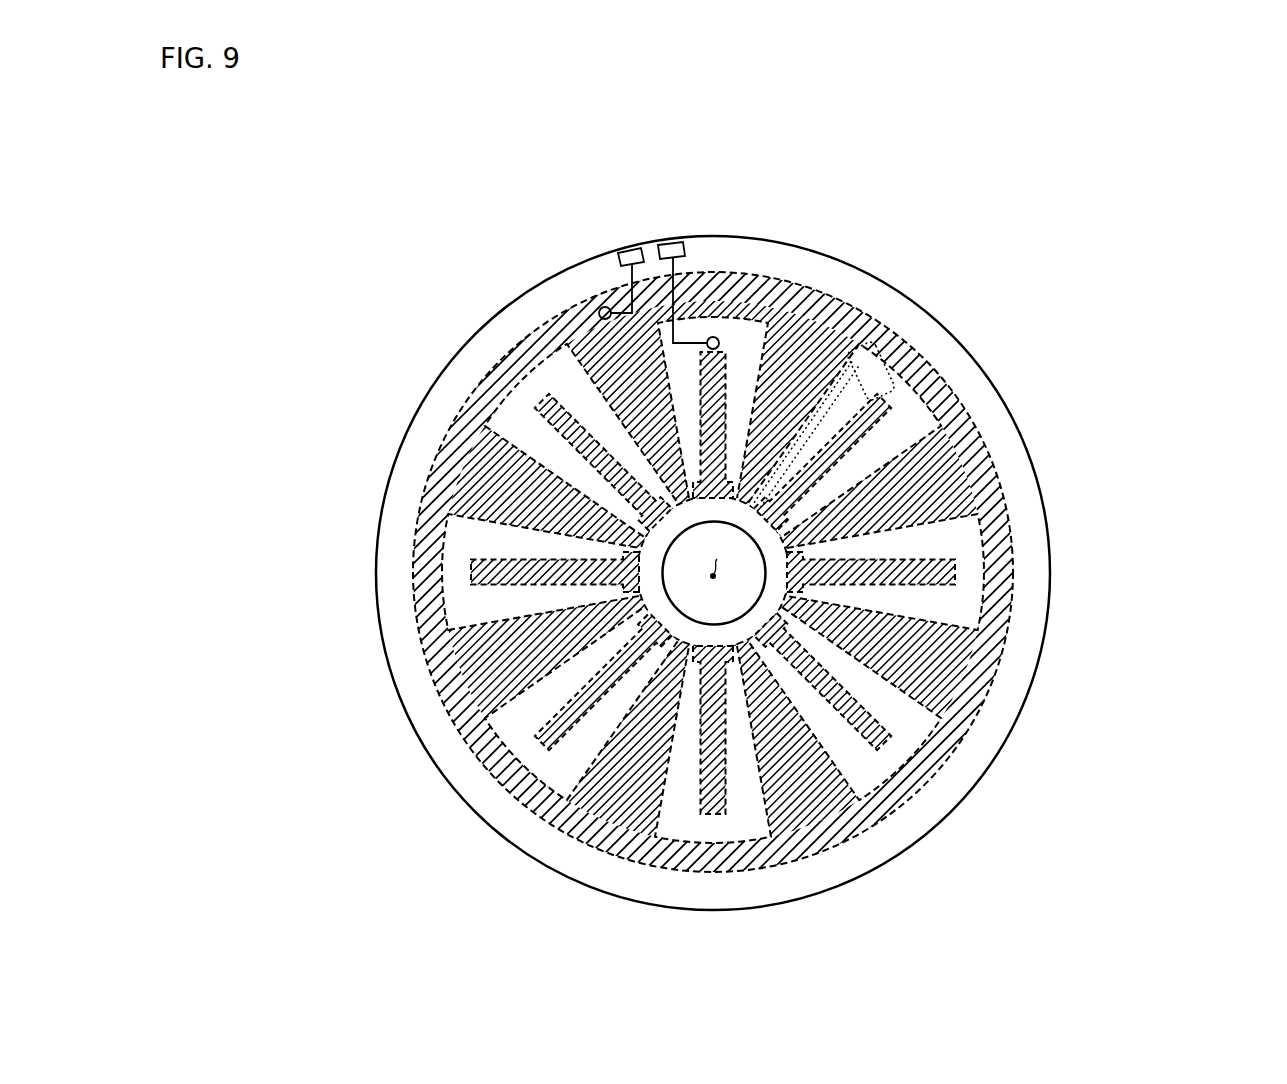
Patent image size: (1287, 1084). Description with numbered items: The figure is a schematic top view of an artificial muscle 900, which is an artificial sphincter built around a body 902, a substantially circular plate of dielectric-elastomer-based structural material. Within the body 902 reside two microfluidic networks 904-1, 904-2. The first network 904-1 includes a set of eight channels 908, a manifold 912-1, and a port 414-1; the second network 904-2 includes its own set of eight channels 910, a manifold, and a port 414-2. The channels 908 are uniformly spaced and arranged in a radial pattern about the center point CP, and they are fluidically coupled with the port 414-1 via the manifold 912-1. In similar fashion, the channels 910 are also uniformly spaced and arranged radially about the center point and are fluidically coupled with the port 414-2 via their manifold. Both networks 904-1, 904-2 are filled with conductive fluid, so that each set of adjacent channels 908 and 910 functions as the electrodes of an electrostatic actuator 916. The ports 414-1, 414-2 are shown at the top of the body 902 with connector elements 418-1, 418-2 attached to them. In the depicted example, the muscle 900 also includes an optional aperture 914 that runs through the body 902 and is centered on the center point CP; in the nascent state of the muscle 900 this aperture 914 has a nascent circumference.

The muscle 900 is at (360, 144).
The body 902 is at (1018, 708).
The microfluidic network 904-1 is at (450, 773).
The microfluidic network 904-2 is at (613, 708).
The channels 908 is at (582, 486).
The channels 910 is at (522, 580).
The manifold 912-1 is at (936, 348).
The aperture 914 is at (663, 557).
The electrostatic actuator 916 is at (868, 350).
The port 414-1 is at (602, 307).
The port 414-2 is at (716, 338).
The fluid connector 418-1 is at (630, 248).
The fluid connector 418-2 is at (675, 243).